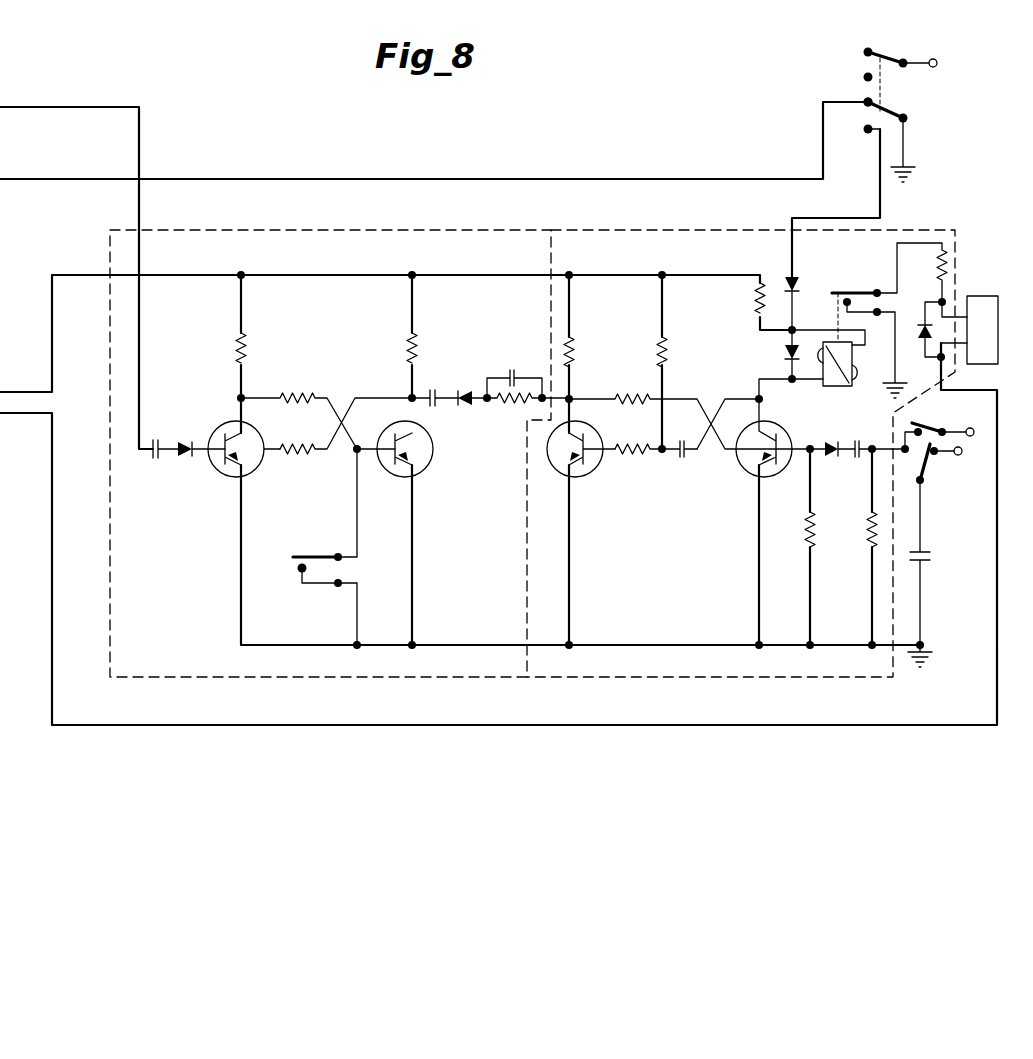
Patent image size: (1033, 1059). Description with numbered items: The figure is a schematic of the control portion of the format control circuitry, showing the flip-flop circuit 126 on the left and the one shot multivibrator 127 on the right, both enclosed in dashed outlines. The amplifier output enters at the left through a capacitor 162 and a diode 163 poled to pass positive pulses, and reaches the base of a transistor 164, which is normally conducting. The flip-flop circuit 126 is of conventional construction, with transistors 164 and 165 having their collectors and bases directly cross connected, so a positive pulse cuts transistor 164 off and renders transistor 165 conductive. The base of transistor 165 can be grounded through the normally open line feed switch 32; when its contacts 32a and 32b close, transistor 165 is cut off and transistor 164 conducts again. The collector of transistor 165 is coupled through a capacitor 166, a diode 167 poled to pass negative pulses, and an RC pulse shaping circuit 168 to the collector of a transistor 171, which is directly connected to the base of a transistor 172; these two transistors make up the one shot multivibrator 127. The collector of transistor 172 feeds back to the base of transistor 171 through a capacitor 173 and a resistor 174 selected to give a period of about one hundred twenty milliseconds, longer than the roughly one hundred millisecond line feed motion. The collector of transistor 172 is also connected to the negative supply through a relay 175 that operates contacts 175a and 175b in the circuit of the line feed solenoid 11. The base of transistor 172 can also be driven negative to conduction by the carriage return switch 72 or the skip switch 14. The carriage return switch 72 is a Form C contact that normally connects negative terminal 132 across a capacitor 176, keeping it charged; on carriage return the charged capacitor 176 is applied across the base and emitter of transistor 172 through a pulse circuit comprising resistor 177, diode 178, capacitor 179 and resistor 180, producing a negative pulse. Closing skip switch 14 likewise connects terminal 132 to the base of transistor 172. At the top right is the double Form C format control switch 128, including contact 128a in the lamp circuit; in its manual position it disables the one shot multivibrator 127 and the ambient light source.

The line feed solenoid 11 is at (978, 306).
The skip switch 14 is at (928, 424).
The line feed switch 32 is at (310, 568).
The switch contact 32a is at (316, 553).
The switch contact 32b is at (300, 572).
The carriage return switch 72 is at (931, 465).
The flip-flop circuit 126 is at (425, 230).
The one shot multivibrator 127 is at (683, 230).
The format control switch 128 is at (887, 84).
The contact of format control switch 128a is at (862, 106).
The terminal 132 is at (968, 44).
The capacitor 162 is at (153, 460).
The diode 163 is at (182, 444).
The transistor 164 is at (254, 470).
The transistor 165 is at (405, 478).
The capacitor 166 is at (437, 392).
The diode 167 is at (470, 392).
The RC pulse shaping circuit 168 is at (516, 373).
The transistor 171 is at (590, 471).
The transistor 172 is at (748, 473).
The capacitor 173 is at (688, 458).
The resistor 174 is at (640, 458).
The relay 175 is at (846, 387).
The relay contact 175a is at (858, 268).
The relay contact 175b is at (850, 302).
The capacitor 176 is at (932, 560).
The resistor 177 is at (808, 535).
The diode 178 is at (832, 458).
The capacitor 179 is at (857, 460).
The resistor 180 is at (866, 535).